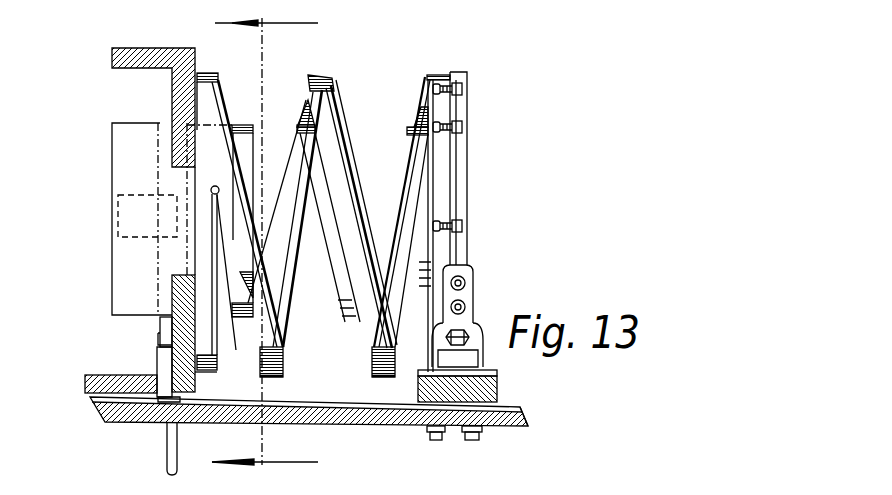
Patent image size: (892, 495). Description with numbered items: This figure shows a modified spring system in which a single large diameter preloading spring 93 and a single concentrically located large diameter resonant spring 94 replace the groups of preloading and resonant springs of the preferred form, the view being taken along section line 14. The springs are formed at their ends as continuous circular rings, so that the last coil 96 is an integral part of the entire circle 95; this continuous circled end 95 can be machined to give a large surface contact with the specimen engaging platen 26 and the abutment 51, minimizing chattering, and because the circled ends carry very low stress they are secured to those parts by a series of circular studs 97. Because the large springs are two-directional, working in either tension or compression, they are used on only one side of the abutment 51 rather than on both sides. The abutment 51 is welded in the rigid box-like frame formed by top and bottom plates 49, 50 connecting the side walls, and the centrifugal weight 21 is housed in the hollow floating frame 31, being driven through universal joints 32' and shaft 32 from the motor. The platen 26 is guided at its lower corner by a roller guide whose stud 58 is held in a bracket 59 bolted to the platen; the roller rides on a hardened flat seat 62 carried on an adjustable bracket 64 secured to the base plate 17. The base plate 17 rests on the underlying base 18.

The section line 14- 14 is at (265, 242).
The base plate 17 is at (518, 415).
The base plate 18 is at (320, 387).
The centrifugal weight 21 is at (118, 217).
The specimen engaging platen 26 is at (467, 178).
The floating frame 31 is at (127, 123).
The shaft 32 is at (155, 448).
The universal joints 32' is at (155, 359).
The top plate 49 is at (173, 50).
The bottom plate 50 is at (122, 358).
The abutment 51 is at (172, 297).
The stud 58 is at (467, 330).
The bracket 59 is at (470, 300).
The flat seat 62 is at (497, 372).
The adjustable bracket 64 is at (485, 392).
The preloading spring 93 is at (337, 58).
The resonant spring 94 is at (263, 102).
The continuous circled end 95 is at (441, 76).
The last coil 96 is at (375, 370).
The circular studs 97 is at (462, 125).